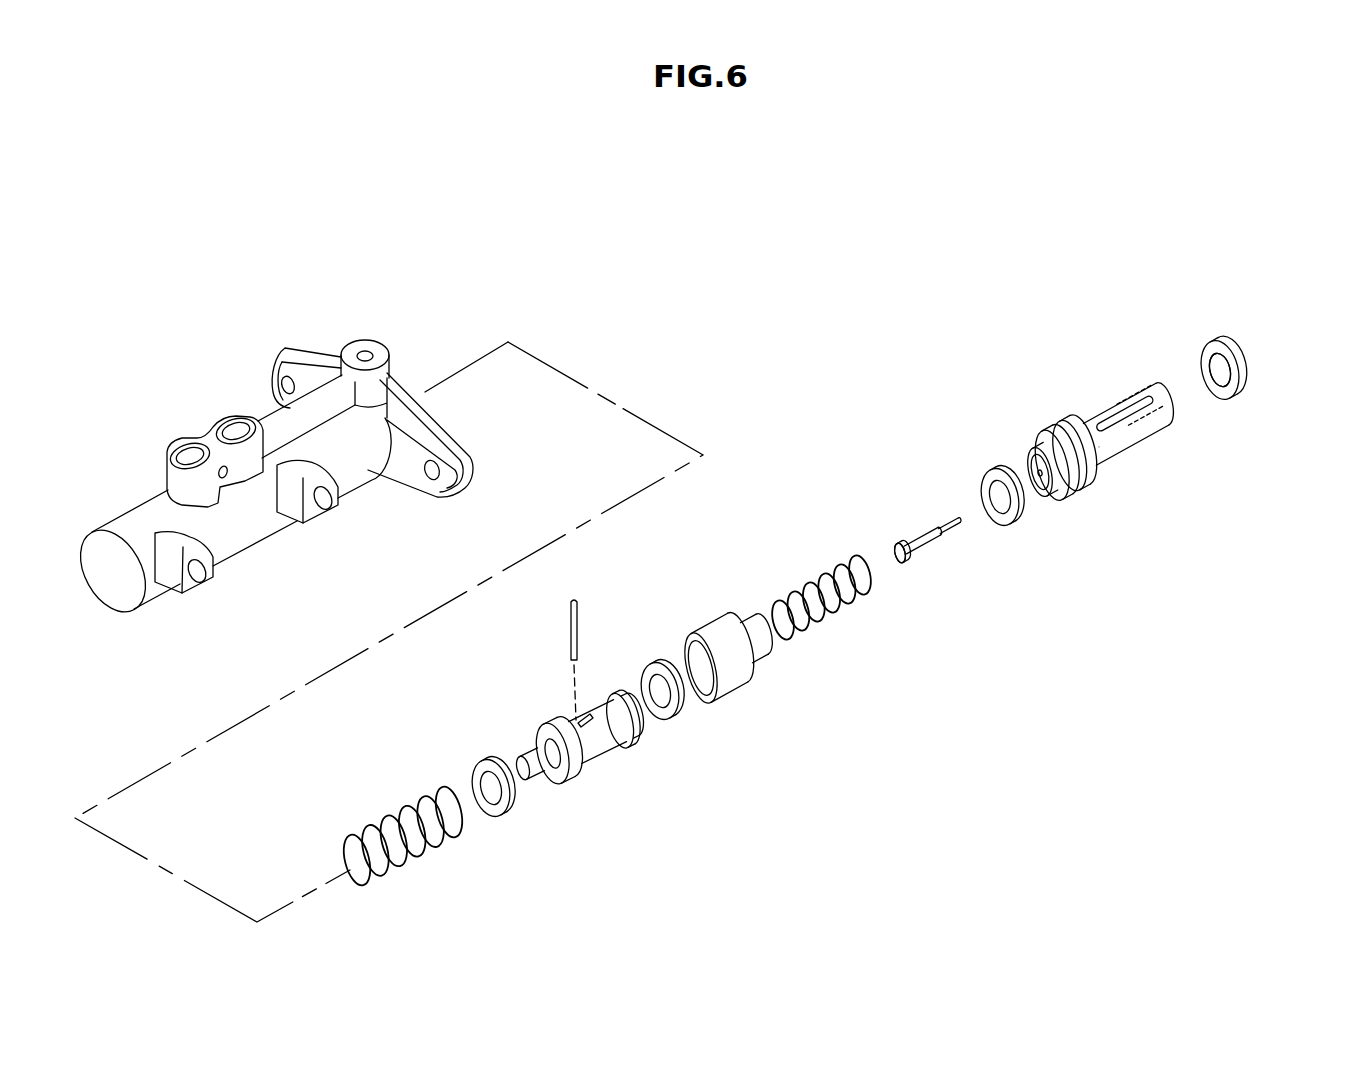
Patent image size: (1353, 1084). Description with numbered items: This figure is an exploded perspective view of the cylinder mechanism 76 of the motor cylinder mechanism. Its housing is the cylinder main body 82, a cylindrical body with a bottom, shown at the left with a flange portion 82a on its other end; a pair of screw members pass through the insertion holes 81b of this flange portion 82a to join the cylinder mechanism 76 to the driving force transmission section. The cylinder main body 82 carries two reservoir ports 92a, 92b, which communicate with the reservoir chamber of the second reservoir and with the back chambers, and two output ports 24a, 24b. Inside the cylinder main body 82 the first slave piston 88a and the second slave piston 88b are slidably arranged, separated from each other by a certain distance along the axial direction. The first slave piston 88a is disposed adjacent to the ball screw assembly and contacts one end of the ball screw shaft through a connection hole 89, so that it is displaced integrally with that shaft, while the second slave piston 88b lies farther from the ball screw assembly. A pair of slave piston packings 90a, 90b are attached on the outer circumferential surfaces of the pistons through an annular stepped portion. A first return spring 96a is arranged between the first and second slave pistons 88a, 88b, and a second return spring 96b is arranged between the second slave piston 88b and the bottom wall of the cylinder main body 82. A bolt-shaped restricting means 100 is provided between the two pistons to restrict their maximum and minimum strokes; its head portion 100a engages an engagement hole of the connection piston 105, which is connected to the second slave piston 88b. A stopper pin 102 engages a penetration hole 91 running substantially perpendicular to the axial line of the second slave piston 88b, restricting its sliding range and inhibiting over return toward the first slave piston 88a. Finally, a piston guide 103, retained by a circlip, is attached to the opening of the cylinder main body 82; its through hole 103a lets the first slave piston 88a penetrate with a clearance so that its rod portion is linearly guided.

The cylinder mechanism 76 is at (717, 786).
The cylinder main body 82 is at (245, 537).
The flange portion 82a is at (462, 470).
The insertion holes 81b is at (286, 352).
The output port 24a is at (324, 500).
The output port 24b is at (197, 572).
The reservoir port 92a is at (234, 433).
The reservoir port 92b is at (185, 457).
The first slave piston 88a is at (1118, 452).
The second slave piston 88b is at (592, 746).
The connection hole 89 is at (1123, 407).
The slave piston packing 90a is at (683, 706).
The slave piston packing 90b is at (510, 795).
The penetration hole 91 is at (590, 712).
The first return spring 96a is at (828, 610).
The second return spring 96b is at (418, 848).
The restricting means 100 is at (928, 530).
The head portion 100a is at (898, 563).
The stopper pin 102 is at (578, 625).
The piston guide 103 is at (1242, 378).
The through hole 103a is at (1212, 386).
The connection piston 105 is at (722, 680).